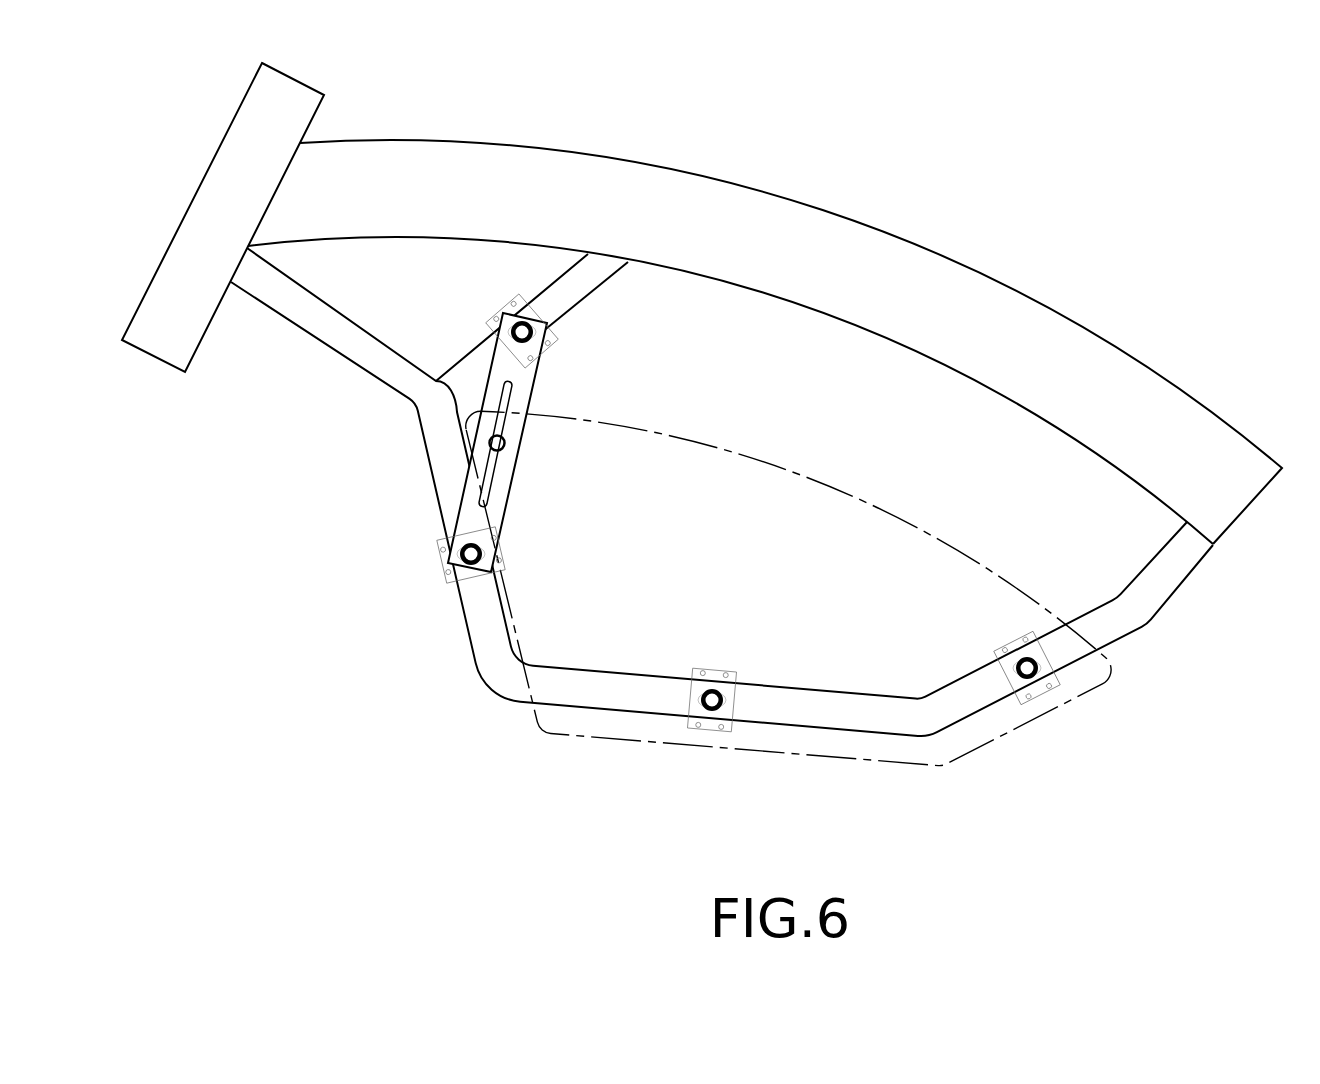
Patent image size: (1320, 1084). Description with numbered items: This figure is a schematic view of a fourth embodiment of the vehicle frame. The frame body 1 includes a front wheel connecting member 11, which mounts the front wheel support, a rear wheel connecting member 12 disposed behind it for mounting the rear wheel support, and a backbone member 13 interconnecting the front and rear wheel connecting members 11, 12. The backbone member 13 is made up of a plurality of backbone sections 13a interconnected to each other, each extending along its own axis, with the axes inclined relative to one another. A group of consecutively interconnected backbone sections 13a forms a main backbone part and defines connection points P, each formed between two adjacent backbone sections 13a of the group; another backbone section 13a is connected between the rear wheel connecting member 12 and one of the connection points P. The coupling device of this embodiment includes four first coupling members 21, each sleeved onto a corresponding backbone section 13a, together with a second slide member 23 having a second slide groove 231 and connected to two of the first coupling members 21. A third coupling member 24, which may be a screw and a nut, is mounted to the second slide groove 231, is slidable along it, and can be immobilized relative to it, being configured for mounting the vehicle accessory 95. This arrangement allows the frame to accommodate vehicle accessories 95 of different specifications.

The frame body 1 is at (697, 464).
The front wheel connecting member 11 is at (220, 197).
The rear wheel connecting member 12 is at (1127, 387).
The backbone member 13 is at (623, 719).
The backbone section 13a is at (575, 287).
The first coupling member 21 is at (509, 305).
The second slide member 23 is at (487, 442).
The second slide groove 231 is at (488, 483).
The third coupling member 24 is at (500, 443).
The vehicle accessory 95 is at (553, 735).
The connection point P is at (412, 408).